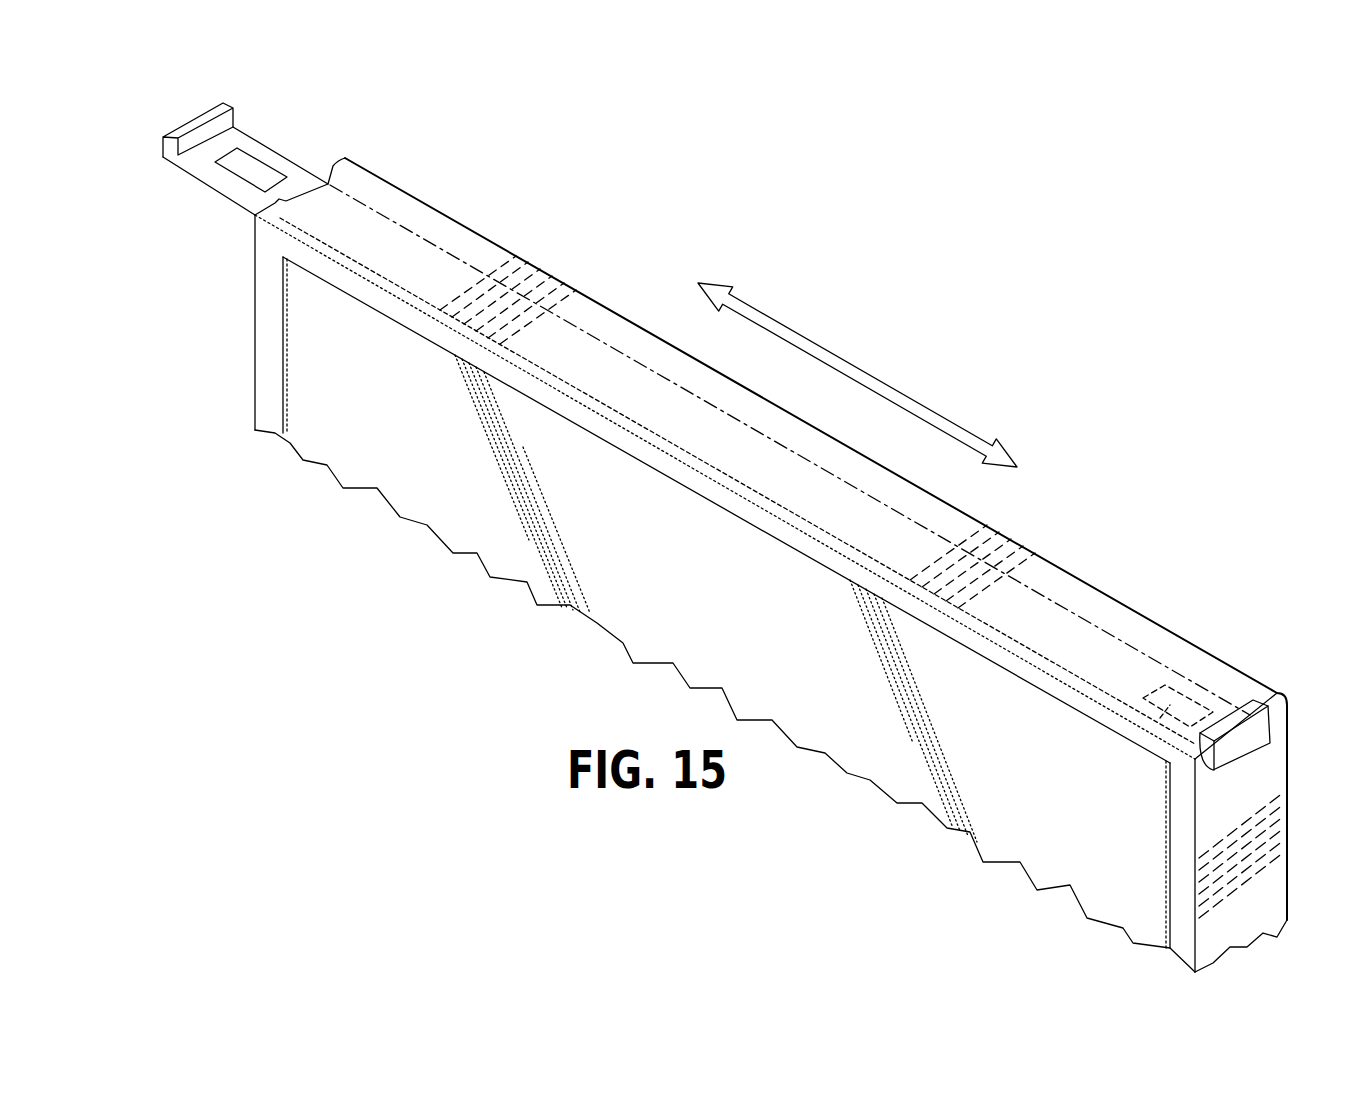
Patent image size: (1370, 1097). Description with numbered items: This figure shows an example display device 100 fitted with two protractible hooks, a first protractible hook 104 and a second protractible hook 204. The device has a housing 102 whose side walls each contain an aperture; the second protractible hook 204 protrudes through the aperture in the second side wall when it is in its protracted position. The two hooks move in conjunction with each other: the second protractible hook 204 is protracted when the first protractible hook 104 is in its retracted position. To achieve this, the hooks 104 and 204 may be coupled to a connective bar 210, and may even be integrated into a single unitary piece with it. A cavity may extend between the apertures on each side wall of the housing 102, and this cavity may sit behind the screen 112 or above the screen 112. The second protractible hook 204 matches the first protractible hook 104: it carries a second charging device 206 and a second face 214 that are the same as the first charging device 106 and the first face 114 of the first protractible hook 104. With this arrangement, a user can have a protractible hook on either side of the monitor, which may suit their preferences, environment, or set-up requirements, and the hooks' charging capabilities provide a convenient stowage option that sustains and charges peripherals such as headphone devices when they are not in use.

The display device 100 is at (752, 512).
The housing 102 is at (499, 243).
The first protractible hook 104 is at (245, 139).
The first charging device 106 is at (238, 176).
The screen 112 is at (742, 620).
The first face 114 is at (190, 128).
The second protractible hook 204 is at (1207, 671).
The second charging device 206 is at (1167, 712).
The connective bar 210 is at (845, 478).
The second face 214 is at (1262, 750).